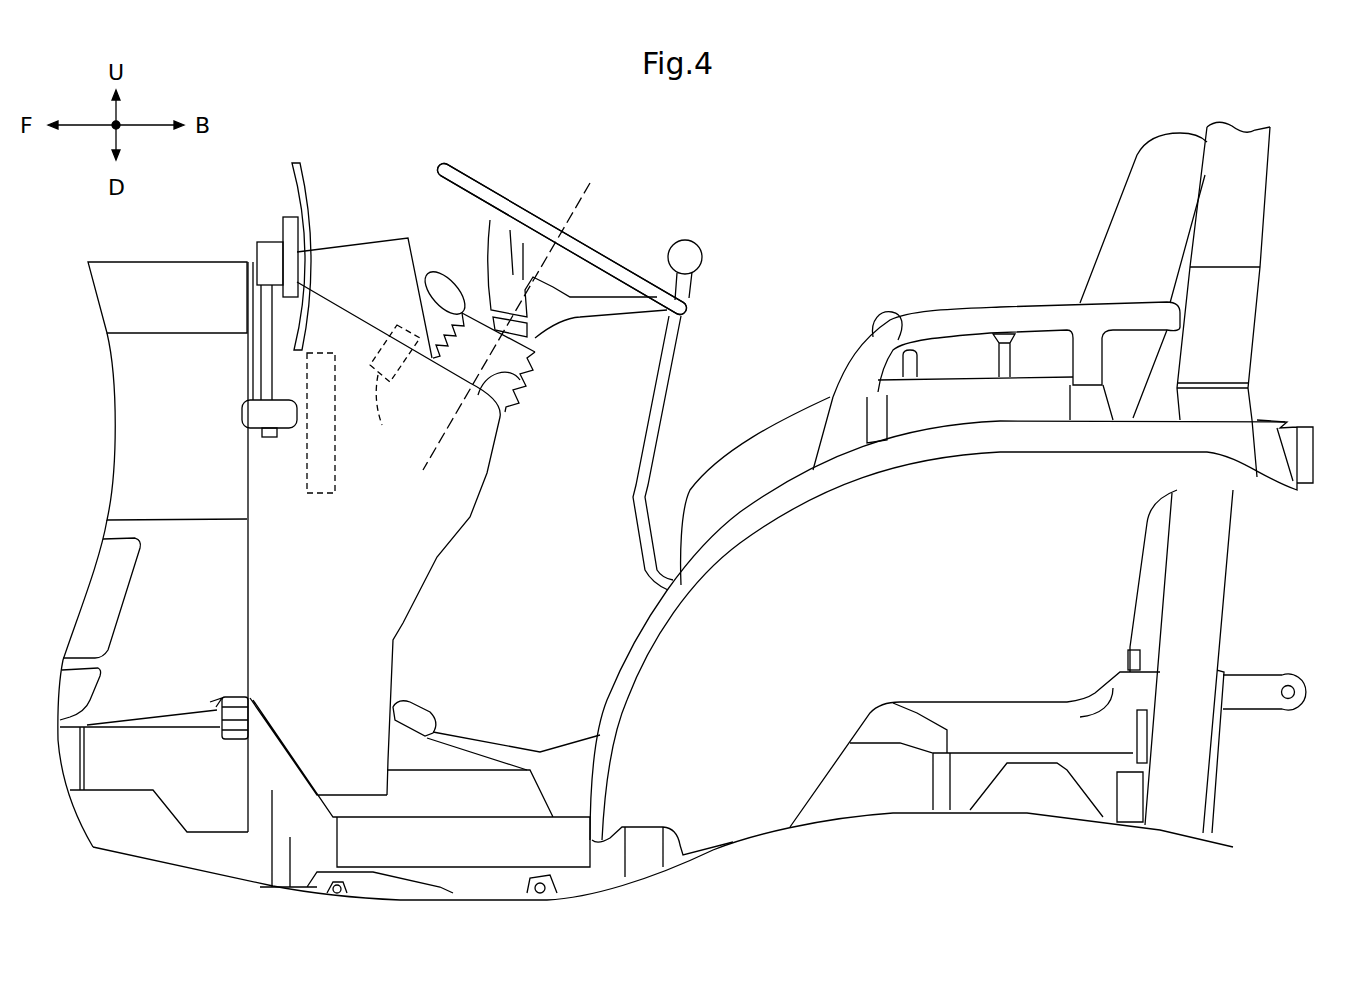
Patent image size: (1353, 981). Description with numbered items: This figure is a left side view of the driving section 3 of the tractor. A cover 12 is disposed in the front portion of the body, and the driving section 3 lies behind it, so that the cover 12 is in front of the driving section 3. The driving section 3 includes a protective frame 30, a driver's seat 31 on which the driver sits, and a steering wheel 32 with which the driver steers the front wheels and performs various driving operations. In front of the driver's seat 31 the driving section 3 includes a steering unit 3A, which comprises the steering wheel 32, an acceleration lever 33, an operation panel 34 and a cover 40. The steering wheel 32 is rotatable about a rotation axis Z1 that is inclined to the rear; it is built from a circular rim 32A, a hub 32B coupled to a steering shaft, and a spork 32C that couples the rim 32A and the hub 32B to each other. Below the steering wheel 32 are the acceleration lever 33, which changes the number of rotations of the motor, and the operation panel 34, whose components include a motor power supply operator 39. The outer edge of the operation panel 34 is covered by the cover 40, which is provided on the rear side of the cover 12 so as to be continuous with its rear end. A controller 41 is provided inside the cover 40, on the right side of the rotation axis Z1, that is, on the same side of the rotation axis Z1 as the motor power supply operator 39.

The driving section 3 is at (798, 261).
The steering unit 3A is at (573, 155).
The cover 12 is at (152, 258).
The protective frame 30 is at (1247, 177).
The driver's seat 31 is at (1147, 180).
The steering wheel 32 is at (511, 185).
The circular rim 32A is at (643, 300).
The hub 32B is at (543, 317).
The spork 32C is at (500, 235).
The acceleration lever 33 is at (437, 280).
The operation panel 34 is at (517, 377).
The motor power supply operator 39 is at (395, 396).
The cover 40 is at (437, 567).
The controller 41 is at (317, 463).
The rotation axis Z1 is at (583, 197).